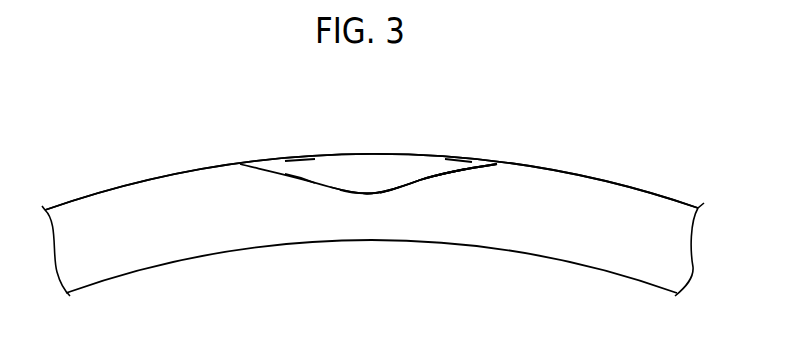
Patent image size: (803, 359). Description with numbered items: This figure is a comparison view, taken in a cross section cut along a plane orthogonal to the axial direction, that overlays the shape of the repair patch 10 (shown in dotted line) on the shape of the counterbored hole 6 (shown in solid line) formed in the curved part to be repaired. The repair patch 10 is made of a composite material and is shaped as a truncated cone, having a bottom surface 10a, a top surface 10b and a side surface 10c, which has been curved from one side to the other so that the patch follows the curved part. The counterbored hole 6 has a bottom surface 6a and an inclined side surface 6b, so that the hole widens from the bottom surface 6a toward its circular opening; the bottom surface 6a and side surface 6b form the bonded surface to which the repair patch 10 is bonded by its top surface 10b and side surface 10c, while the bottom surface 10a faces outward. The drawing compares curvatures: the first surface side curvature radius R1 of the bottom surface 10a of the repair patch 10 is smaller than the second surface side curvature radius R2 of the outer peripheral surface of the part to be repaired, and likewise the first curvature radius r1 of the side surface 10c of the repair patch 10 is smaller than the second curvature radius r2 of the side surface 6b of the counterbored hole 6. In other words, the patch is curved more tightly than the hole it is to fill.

The repair patch 10 is at (290, 178).
The bottom surface 10a is at (477, 160).
The top surface 10b is at (370, 195).
The side surface 10c is at (502, 166).
The counterbored hole 6 is at (366, 155).
The bottom surface 6a is at (374, 192).
The side surface 6b is at (420, 181).
The first surface side curvature radius R1 is at (460, 156).
The second surface side curvature radius R2 is at (302, 155).
The first curvature radius r1 is at (451, 192).
The second curvature radius r2 is at (296, 192).